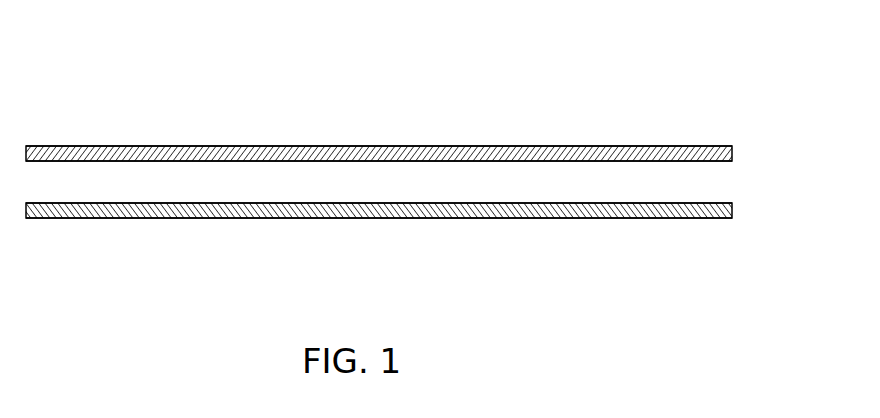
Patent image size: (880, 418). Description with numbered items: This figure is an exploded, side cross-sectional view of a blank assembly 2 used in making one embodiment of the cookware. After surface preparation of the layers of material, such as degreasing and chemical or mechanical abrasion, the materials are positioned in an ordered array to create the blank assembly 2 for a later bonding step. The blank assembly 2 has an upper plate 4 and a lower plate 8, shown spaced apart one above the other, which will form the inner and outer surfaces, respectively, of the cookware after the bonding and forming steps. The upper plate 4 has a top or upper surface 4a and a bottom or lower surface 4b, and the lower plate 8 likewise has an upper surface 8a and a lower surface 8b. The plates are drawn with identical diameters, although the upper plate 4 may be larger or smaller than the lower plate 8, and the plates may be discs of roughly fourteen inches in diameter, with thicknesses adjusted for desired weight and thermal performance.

The blank assembly 2 is at (745, 58).
The upper plate 4 is at (716, 158).
The upper surface of upper plate 4a is at (73, 155).
The lower surface of upper plate 4b is at (165, 163).
The lower plate 8 is at (716, 204).
The upper surface of lower plate 8a is at (375, 205).
The lower surface of lower plate 8b is at (452, 218).